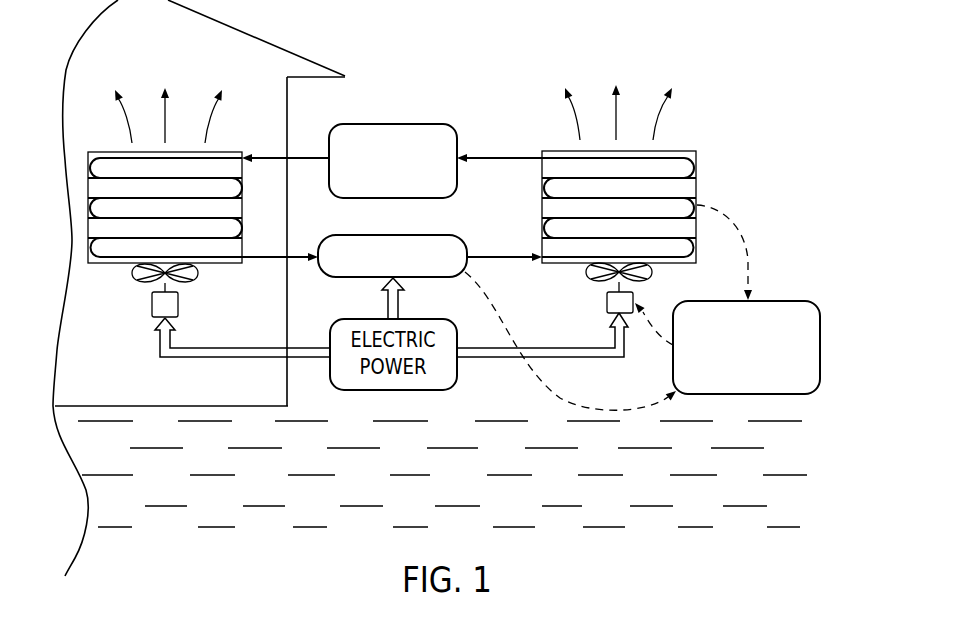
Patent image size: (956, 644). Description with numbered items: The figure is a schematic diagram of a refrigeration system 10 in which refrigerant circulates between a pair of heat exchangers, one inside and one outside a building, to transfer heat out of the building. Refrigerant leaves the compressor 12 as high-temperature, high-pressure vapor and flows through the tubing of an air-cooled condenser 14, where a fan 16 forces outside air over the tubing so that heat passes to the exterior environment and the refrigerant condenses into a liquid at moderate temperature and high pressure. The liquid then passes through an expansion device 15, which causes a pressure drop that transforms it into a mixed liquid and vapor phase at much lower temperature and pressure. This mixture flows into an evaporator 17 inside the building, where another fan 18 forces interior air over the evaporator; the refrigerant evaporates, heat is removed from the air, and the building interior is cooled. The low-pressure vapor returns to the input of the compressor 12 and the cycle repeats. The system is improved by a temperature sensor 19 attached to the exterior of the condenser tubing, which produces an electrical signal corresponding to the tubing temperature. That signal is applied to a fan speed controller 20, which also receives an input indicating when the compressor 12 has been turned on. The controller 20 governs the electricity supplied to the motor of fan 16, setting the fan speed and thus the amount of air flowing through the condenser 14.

The refrigeration system 10 is at (412, 82).
The compressor 12 is at (338, 278).
The air-cooled condenser 14 is at (705, 164).
The expansion device 15 is at (435, 124).
The fan 16 is at (607, 306).
The evaporator 17 is at (107, 264).
The fan 18 is at (180, 303).
The temperature sensor 19 is at (697, 205).
The fan speed controller 20 is at (786, 301).